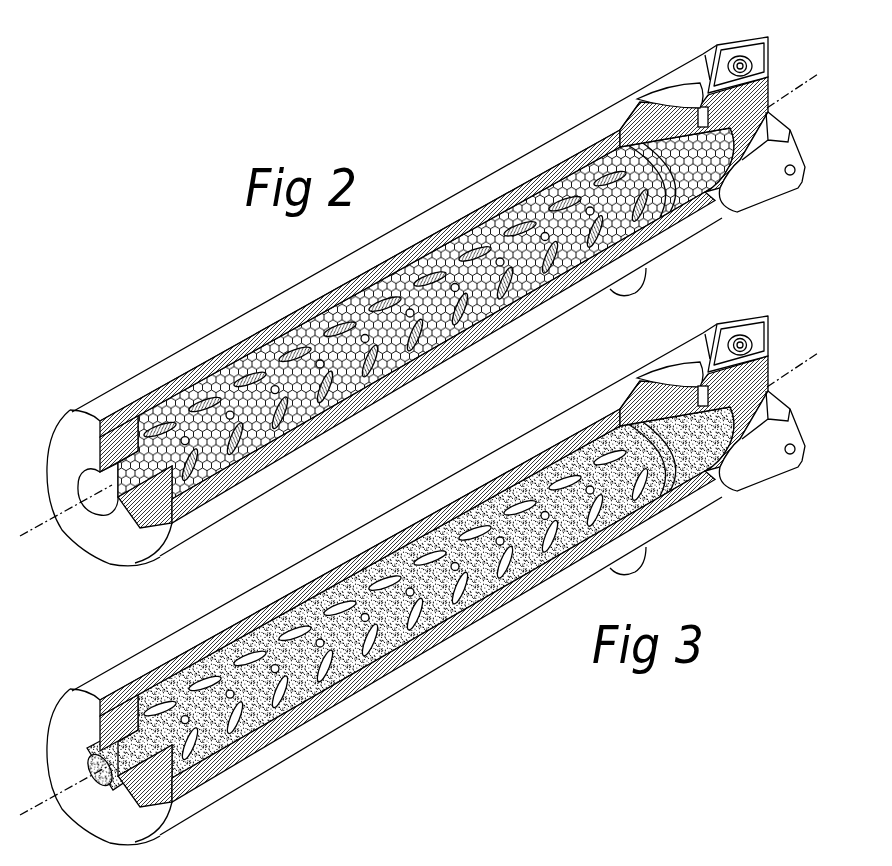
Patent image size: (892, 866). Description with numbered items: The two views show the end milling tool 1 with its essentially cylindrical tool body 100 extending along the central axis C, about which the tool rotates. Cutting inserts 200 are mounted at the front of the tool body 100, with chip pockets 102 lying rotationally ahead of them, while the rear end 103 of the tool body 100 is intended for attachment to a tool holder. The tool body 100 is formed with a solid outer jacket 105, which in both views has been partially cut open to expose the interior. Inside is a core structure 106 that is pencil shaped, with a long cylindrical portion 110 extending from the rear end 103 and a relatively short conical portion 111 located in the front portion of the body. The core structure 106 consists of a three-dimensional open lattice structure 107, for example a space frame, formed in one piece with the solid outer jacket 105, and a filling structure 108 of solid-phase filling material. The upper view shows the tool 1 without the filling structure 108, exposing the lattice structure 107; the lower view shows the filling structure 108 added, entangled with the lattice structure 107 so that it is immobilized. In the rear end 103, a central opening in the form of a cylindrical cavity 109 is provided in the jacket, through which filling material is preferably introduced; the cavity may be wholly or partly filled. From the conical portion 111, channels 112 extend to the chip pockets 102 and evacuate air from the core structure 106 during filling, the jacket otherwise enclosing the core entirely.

In FIG. 2, the end milling tool 1 is at (558, 85).
In FIG. 2, the tool body 100 is at (513, 165).
In FIG. 3, the tool body 100 is at (397, 579).
In FIG. 3, the chip pockets 102 is at (712, 386).
In FIG. 2, the rear end 103 is at (72, 443).
In FIG. 3, the rear end 103 is at (106, 741).
In FIG. 2, the solid outer jacket 105 is at (272, 330).
In FIG. 3, the solid outer jacket 105 is at (407, 608).
In FIG. 3, the core structure 106 is at (426, 592).
In FIG. 2, the lattice structure 107 is at (207, 393).
In FIG. 3, the lattice structure 107 is at (396, 619).
In FIG. 3, the filling structure 108 is at (166, 684).
In FIG. 2, the cylindrical cavity 109 is at (107, 503).
In FIG. 3, the cylindrical cavity 109 is at (78, 798).
In FIG. 3, the cylindrical portion 110 is at (452, 663).
In FIG. 3, the conical portion 111 is at (705, 473).
In FIG. 3, the channels 112 is at (699, 433).
In FIG. 2, the cutting inserts 200 is at (776, 62).
In FIG. 3, the cutting inserts 200 is at (758, 317).
In FIG. 2, the central axis C is at (424, 300).
In FIG. 3, the central axis C is at (424, 578).